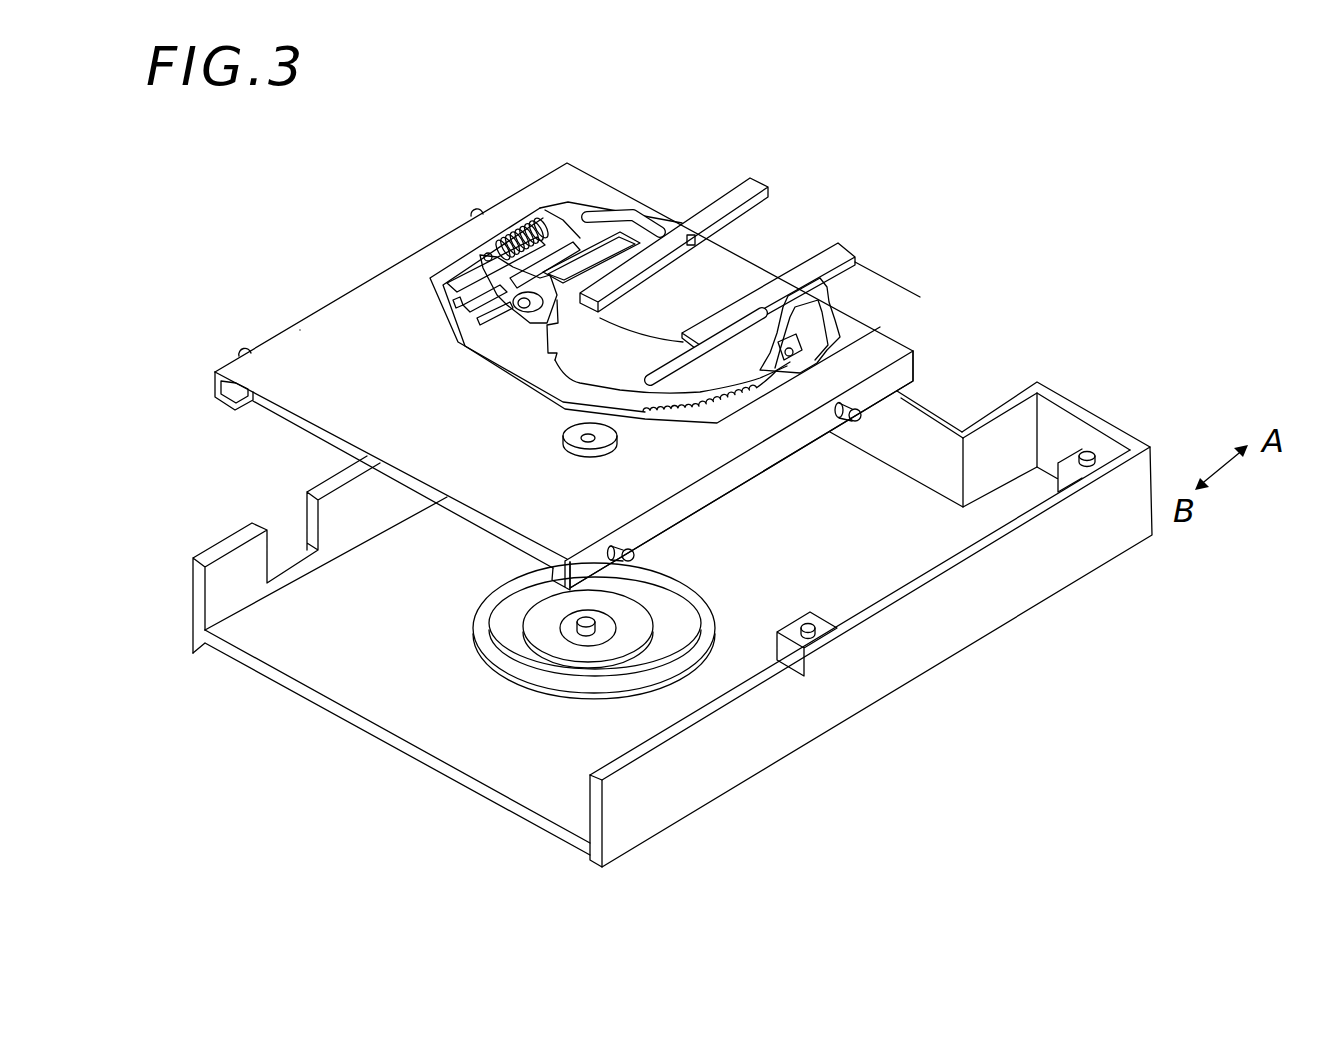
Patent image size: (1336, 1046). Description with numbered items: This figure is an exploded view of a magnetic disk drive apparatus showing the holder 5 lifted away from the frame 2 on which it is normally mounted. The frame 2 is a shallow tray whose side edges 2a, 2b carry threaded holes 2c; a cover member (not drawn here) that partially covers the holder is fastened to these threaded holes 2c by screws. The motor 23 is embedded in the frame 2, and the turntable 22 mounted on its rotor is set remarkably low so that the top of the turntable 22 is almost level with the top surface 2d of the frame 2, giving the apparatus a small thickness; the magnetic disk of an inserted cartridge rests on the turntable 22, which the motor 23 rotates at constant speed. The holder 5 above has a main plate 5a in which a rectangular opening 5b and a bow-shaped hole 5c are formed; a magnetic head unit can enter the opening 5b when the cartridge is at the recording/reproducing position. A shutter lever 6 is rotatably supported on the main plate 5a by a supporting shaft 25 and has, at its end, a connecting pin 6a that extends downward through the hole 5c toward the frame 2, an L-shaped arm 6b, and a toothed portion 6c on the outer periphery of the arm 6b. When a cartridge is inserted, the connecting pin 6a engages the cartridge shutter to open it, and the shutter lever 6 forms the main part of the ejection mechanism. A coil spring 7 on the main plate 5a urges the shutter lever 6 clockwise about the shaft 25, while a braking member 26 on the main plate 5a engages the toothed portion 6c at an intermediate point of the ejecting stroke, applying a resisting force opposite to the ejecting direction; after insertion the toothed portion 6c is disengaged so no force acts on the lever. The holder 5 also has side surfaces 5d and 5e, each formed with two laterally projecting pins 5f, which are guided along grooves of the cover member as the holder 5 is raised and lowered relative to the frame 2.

The frame 2 is at (790, 768).
The side edge 2a is at (230, 543).
The side edge 2b is at (900, 593).
The threaded holes 2c is at (1089, 452).
The top surface 2d is at (368, 703).
The holder 5 is at (283, 420).
The main plate 5a is at (370, 302).
The rectangular opening 5b is at (712, 240).
The bow-shaped hole 5c is at (823, 297).
The side surface 5d is at (213, 378).
The side surface 5e is at (710, 497).
The pins 5f is at (476, 210).
The shutter lever 6 is at (518, 350).
The connecting pin 6a is at (847, 322).
The L-shaped arm 6b is at (623, 403).
The toothed portion 6c is at (667, 420).
The coil spring 7 is at (511, 232).
The turntable 22 is at (636, 638).
The motor 23 is at (673, 608).
The supporting shaft 25 is at (470, 308).
The braking member 26 is at (568, 452).